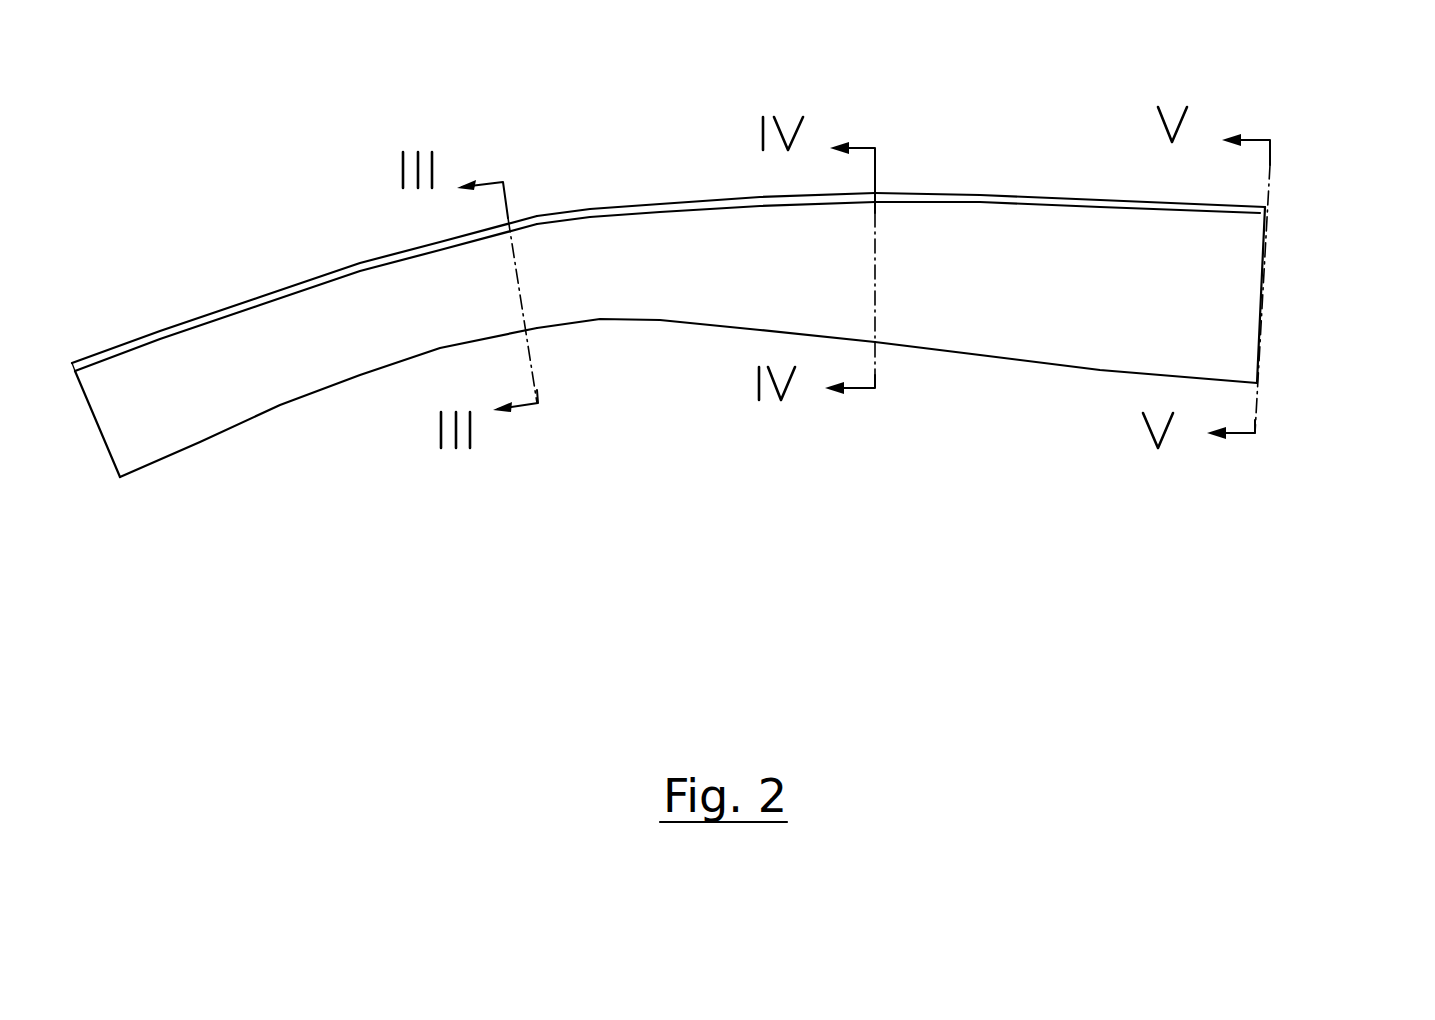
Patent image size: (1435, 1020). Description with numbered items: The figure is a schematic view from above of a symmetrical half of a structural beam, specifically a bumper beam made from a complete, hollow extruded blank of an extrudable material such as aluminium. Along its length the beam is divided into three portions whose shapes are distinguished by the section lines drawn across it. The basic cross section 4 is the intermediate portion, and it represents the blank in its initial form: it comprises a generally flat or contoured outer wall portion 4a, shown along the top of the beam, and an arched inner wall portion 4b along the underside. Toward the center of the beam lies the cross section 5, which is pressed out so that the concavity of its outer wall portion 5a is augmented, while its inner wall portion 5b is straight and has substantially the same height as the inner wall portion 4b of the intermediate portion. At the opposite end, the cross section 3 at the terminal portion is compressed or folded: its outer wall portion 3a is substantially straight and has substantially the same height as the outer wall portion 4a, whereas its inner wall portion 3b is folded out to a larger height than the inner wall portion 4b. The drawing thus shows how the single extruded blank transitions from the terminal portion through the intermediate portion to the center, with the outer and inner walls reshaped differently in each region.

The cross section at the terminal portions 3 is at (527, 280).
The outer wall portion 3a is at (510, 223).
The inner wall portion 3b is at (530, 333).
The basic cross section 4 is at (877, 273).
The outer wall portion 4a is at (875, 192).
The inner wall portion 4b is at (875, 343).
The cross section at the center 5 is at (1260, 307).
The outer wall portion 5a is at (1265, 207).
The inner wall portion 5b is at (1257, 383).